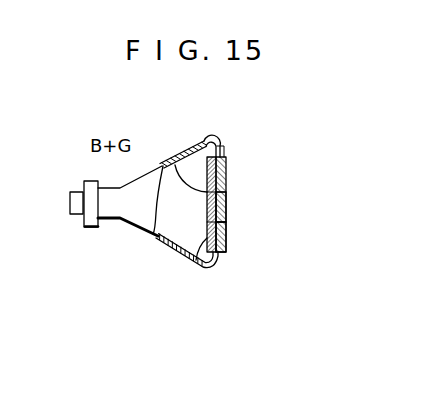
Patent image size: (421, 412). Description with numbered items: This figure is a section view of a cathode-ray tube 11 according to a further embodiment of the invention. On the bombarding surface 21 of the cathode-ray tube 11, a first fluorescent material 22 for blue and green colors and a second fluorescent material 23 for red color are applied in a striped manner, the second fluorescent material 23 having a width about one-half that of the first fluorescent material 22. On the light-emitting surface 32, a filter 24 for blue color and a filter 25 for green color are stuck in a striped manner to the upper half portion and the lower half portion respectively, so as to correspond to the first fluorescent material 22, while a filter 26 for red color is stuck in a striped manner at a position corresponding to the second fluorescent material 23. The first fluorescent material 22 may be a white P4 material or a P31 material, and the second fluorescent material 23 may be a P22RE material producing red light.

The cathode-ray tube 11 is at (160, 246).
The bombarding surface 21 is at (205, 140).
The first fluorescent material 22 is at (176, 164).
The second fluorescent material 23 is at (192, 263).
The filter for blue color 24 is at (226, 169).
The filter for green color 25 is at (227, 205).
The filter for red color 26 is at (226, 232).
The light-emitting surface 32 is at (222, 148).